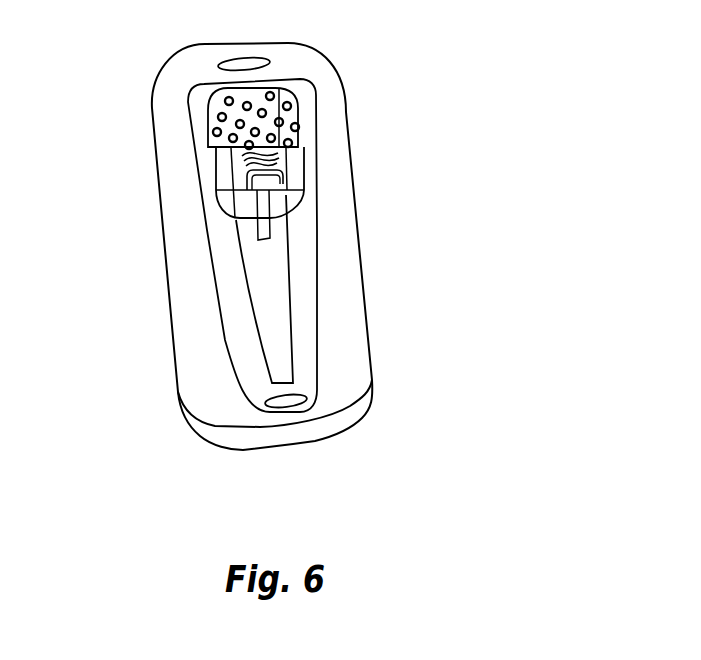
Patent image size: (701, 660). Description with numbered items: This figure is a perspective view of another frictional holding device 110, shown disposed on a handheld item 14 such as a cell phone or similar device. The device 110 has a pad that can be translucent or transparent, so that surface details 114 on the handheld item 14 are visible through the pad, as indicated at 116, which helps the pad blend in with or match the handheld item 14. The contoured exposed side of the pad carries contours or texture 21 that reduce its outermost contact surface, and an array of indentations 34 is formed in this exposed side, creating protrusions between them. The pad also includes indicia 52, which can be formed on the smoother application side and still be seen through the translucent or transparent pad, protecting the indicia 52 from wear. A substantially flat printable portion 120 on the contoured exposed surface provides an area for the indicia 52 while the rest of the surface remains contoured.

The handheld item 14 is at (372, 318).
The frictional holding device 110 is at (254, 227).
The indentations 34 is at (235, 147).
The texture 21 is at (300, 160).
The printable portion 120 is at (292, 200).
The surface details visible through the pad 116 is at (296, 232).
The indicia 52 is at (264, 192).
The surface details 114 is at (258, 243).